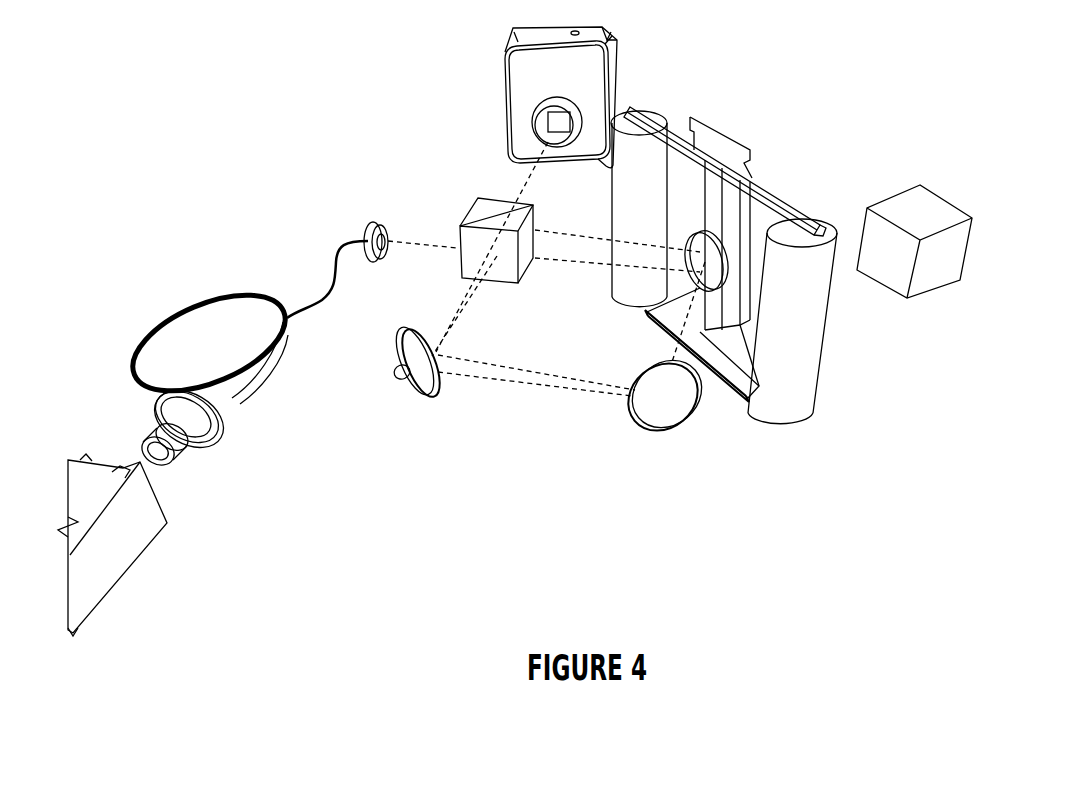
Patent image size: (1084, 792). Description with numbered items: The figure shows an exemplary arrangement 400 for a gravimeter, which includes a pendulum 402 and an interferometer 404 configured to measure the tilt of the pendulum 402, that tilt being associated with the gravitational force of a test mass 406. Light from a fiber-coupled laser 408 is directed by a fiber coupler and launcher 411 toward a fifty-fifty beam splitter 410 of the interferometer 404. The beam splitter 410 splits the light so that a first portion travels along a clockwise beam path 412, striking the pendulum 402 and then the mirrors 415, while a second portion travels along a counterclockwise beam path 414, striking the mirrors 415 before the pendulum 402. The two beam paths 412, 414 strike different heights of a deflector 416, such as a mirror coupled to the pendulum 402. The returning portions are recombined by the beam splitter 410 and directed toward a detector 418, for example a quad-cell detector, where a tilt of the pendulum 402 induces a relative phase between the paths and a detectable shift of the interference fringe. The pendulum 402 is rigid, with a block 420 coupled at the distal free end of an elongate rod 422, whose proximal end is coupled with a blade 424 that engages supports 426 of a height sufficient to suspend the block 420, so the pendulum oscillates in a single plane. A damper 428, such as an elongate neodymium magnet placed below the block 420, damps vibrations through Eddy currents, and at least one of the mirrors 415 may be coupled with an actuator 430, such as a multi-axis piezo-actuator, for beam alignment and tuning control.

The arrangement 400 is at (230, 84).
The pendulum 402 is at (745, 251).
The interferometer 404 is at (508, 390).
The test mass 406 is at (927, 305).
The fiber-coupled laser 408 is at (143, 582).
The beam splitter 410 is at (533, 260).
The fiber coupler and launcher 411 is at (138, 334).
The clockwise beam path 412 is at (578, 262).
The counterclockwise beam path 414 is at (462, 314).
The mirrors 415 is at (410, 340).
The deflector 416 is at (703, 257).
The detector 418 is at (492, 155).
The block 420 is at (732, 350).
The elongate rod 422 is at (717, 217).
The blade 424 is at (690, 118).
The supports 426 is at (800, 390).
The damper 428 is at (738, 398).
The actuator 430 is at (403, 380).